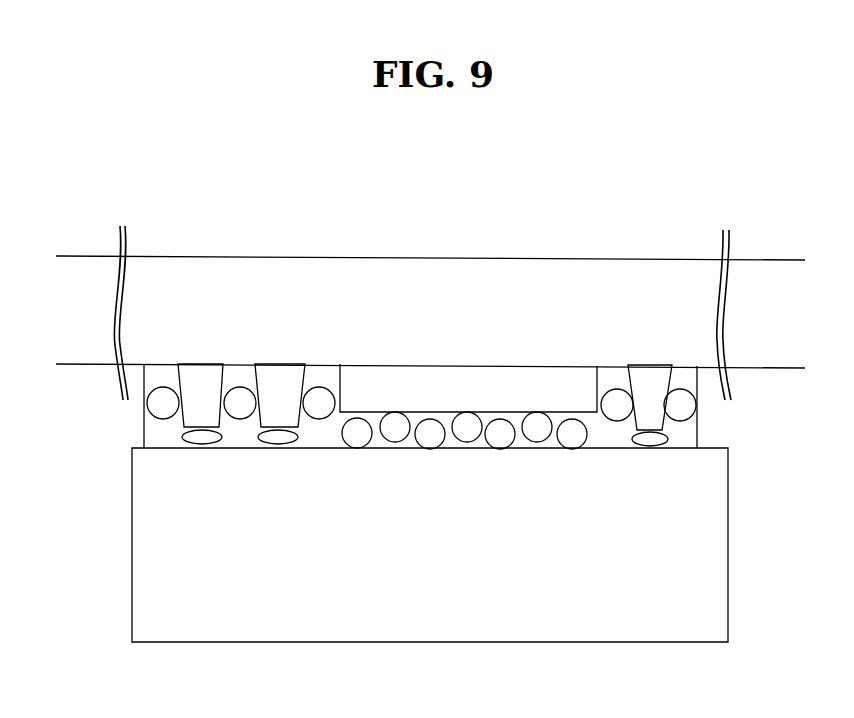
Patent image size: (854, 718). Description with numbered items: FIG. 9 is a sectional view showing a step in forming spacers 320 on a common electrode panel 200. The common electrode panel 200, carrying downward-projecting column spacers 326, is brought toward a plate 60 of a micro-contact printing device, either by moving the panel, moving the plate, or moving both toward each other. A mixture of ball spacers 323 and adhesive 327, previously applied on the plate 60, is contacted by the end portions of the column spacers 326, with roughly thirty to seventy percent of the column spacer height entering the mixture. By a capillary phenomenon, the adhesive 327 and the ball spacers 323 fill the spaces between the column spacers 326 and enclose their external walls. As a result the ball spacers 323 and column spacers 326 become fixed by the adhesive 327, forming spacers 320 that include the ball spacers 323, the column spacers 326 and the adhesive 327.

The common electrode panel 200 is at (81, 260).
The plate 60 is at (728, 538).
The spacers 320 is at (405, 212).
The column spacers 326 is at (284, 377).
The ball spacers 323 is at (318, 392).
The adhesive 327 is at (333, 372).